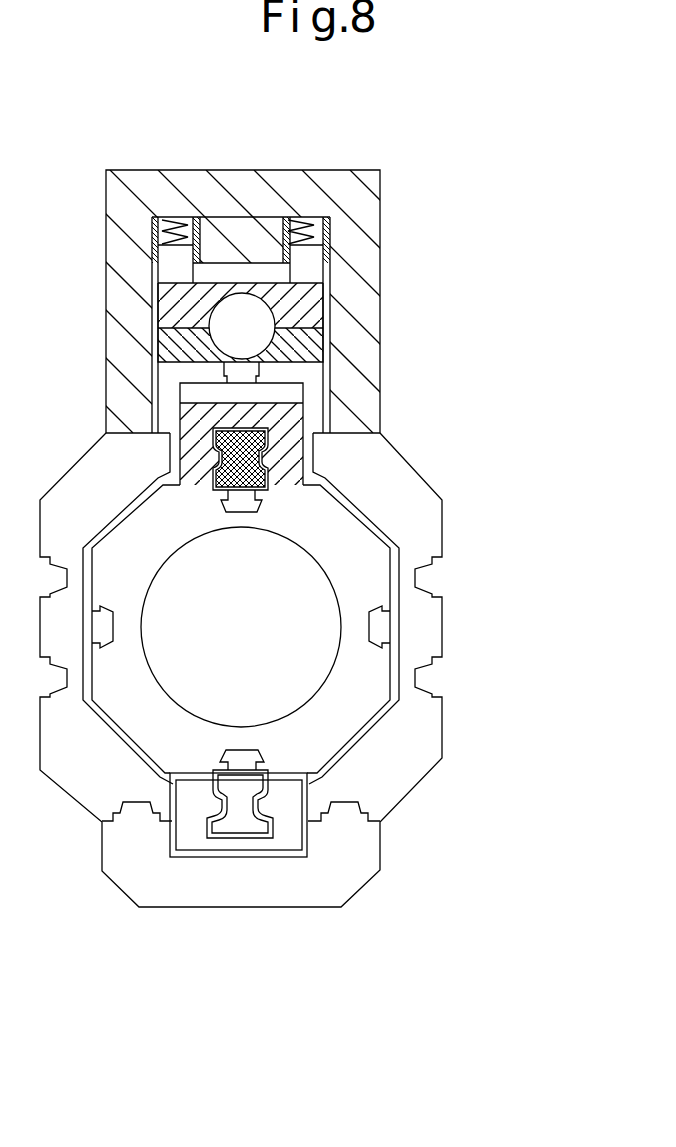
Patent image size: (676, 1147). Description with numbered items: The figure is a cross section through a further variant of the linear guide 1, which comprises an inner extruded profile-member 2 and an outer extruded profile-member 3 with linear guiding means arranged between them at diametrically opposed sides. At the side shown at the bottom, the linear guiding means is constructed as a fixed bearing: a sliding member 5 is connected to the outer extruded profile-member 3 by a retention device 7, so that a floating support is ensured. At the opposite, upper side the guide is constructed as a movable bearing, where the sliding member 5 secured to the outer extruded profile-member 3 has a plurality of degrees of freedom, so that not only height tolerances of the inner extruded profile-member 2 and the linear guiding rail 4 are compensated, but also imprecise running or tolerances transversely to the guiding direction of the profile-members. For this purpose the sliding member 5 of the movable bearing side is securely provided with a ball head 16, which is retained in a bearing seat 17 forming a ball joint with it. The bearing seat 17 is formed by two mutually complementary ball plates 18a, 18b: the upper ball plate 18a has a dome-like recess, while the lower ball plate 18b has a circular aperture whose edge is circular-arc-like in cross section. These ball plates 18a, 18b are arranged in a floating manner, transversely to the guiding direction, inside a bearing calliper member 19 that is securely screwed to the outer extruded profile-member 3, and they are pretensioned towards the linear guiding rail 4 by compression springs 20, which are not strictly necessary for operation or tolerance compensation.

The linear guide 1 is at (476, 294).
The inner extruded profile-member 2 is at (336, 538).
The outer extruded profile-member 3 is at (423, 518).
The linear guiding rail 4 is at (271, 460).
The sliding member 5 is at (283, 414).
The retention device 7 is at (286, 908).
The ball head 16 is at (238, 318).
The bearing seat 17 is at (323, 293).
The upper ball plate 18a is at (298, 313).
The lower ball plate 18b is at (163, 342).
The bearing calliper member 19 is at (115, 283).
The compression spring 20 is at (178, 218).